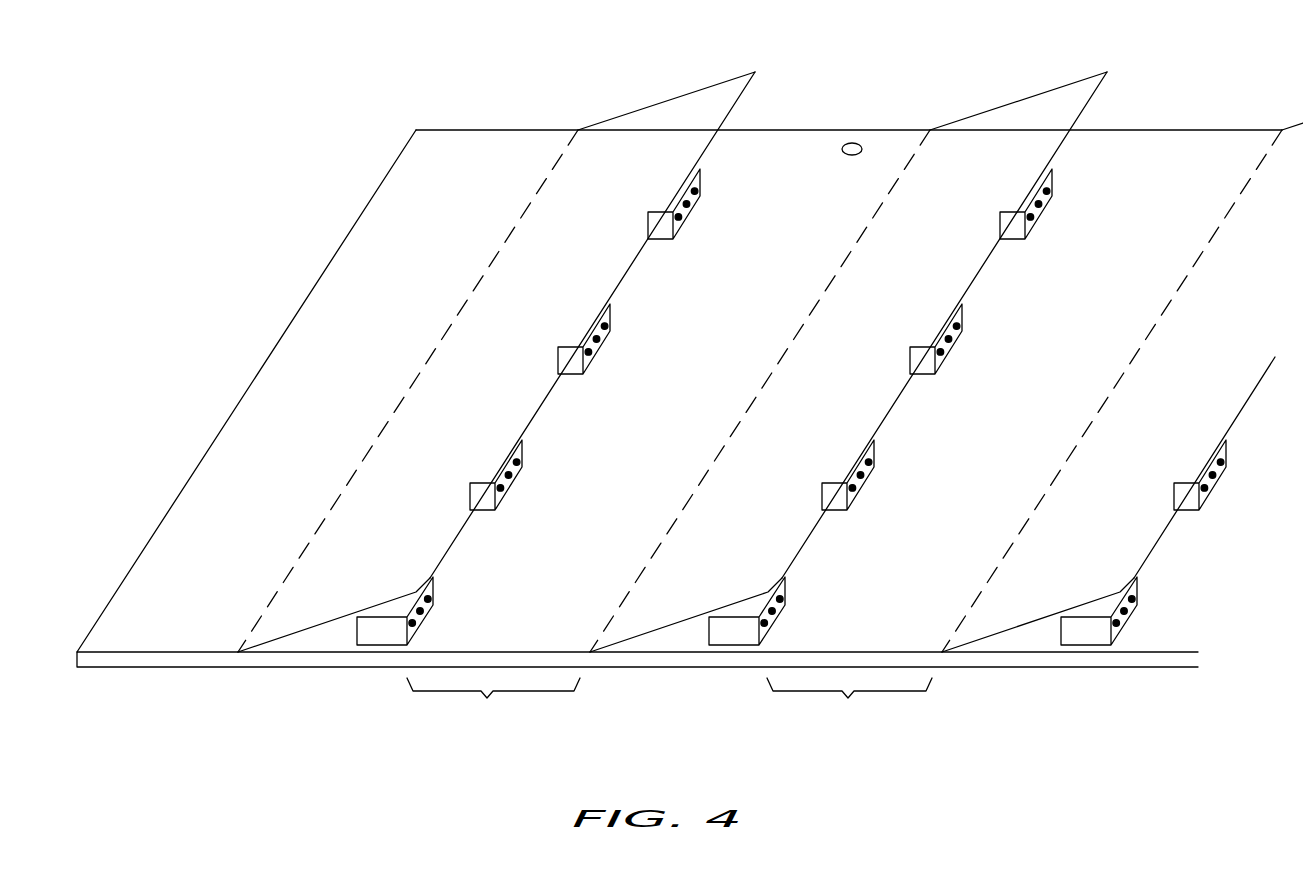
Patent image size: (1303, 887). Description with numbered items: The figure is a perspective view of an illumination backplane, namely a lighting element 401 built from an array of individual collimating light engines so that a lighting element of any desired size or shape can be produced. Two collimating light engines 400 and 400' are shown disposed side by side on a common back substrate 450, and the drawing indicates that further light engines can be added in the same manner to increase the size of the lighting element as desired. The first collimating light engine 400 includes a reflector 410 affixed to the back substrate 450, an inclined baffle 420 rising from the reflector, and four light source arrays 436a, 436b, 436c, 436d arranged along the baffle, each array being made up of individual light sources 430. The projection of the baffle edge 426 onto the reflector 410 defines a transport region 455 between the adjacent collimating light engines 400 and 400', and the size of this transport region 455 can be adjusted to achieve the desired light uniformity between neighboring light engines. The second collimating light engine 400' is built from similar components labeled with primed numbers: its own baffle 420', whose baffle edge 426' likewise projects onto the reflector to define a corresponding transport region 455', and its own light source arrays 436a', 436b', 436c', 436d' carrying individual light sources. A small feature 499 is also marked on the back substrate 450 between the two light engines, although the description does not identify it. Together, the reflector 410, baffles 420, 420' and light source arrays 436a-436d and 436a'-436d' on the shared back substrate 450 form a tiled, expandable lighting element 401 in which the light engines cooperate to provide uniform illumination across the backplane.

The collimating light engine 400 is at (535, 379).
The collimating light engine 400' is at (889, 379).
The lighting element 401 is at (260, 249).
The reflector 410 is at (170, 557).
The baffle 420 is at (535, 338).
The baffle 420' is at (889, 338).
The baffle edge 426 is at (631, 325).
The baffle edge 426' is at (985, 325).
The light source 430 is at (700, 192).
The light source array 436a is at (380, 649).
The light source array 436b is at (538, 478).
The light source array 436c is at (623, 341).
The light source array 436d is at (715, 203).
The light source array 436a' is at (741, 649).
The light source array 436b' is at (893, 478).
The light source array 436c' is at (979, 341).
The light source array 436d' is at (1070, 206).
The back substrate 450 is at (112, 660).
The transport region 455 is at (493, 706).
The transport region 455' is at (849, 706).
The hole 499 is at (852, 143).